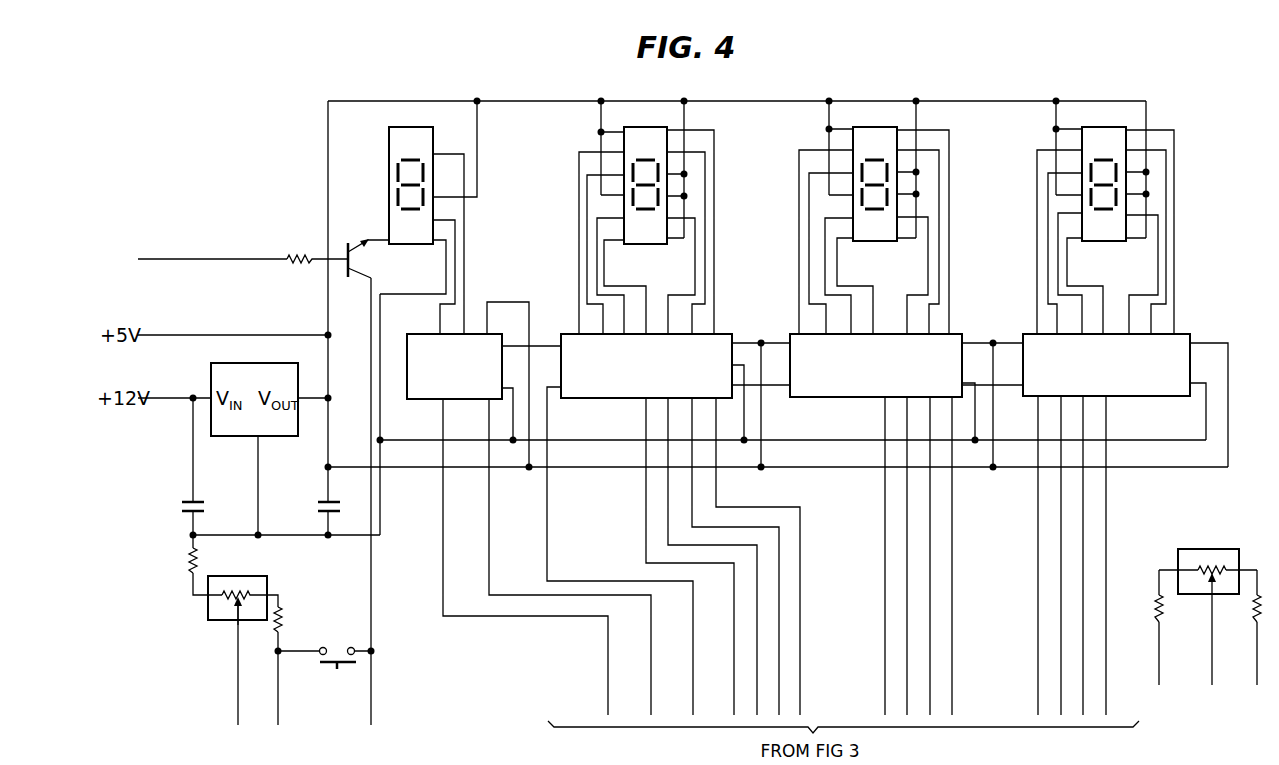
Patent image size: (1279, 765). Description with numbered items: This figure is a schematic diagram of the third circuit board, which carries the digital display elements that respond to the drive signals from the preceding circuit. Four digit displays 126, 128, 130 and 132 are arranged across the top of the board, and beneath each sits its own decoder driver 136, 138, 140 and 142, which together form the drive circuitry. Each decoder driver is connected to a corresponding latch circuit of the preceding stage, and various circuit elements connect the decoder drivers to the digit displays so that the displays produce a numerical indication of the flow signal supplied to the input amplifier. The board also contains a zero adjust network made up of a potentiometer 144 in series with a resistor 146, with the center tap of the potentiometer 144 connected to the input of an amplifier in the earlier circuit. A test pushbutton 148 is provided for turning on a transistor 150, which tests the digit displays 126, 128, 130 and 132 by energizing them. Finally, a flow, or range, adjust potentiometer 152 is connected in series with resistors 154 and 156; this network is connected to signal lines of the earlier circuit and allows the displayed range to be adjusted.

The digit display 126 is at (388, 166).
The digit display 128 is at (648, 127).
The digit display 130 is at (882, 127).
The digit display 132 is at (1103, 127).
The decoder driver 136 is at (441, 378).
The decoder driver 138 is at (633, 378).
The decoder driver 140 is at (862, 378).
The decoder driver 142 is at (1093, 378).
The potentiometer 144 is at (207, 615).
The resistor 146 is at (192, 570).
The test pushbutton 148 is at (322, 662).
The transistor 150 is at (345, 246).
The flow adjust potentiometer 152 is at (1215, 549).
The resistor 154 is at (1157, 613).
The resistor 156 is at (1256, 615).